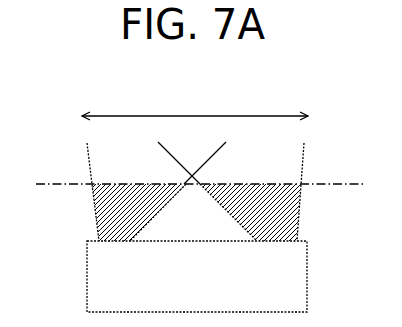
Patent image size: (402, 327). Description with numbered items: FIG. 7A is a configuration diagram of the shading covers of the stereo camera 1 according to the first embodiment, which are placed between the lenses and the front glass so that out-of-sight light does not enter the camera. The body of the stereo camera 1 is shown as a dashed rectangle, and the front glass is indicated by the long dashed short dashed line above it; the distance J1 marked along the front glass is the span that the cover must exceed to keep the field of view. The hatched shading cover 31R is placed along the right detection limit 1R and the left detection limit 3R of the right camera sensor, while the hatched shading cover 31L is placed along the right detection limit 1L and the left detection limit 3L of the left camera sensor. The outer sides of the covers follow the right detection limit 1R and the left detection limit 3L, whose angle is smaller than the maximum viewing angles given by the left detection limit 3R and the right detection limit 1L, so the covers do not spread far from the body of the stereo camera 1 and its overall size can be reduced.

The distance J1 is at (220, 116).
The left detection limit 3L is at (91, 162).
The left detection limit 3R is at (172, 153).
The right detection limit 1L is at (218, 150).
The right detection limit 1R is at (304, 149).
The shading cover 31L is at (97, 233).
The shading cover 31R is at (297, 217).
The stereo camera 1 is at (305, 285).